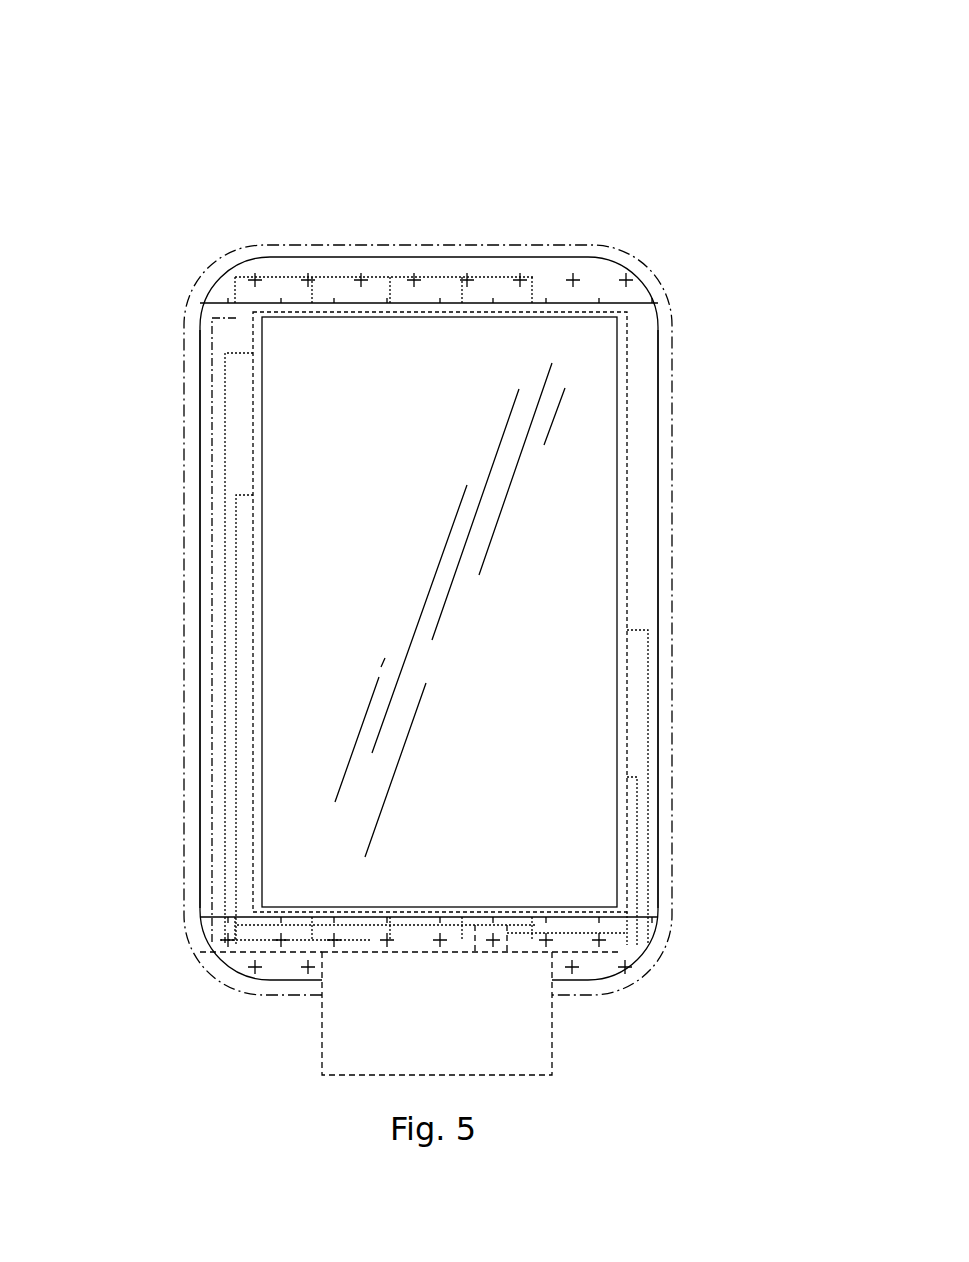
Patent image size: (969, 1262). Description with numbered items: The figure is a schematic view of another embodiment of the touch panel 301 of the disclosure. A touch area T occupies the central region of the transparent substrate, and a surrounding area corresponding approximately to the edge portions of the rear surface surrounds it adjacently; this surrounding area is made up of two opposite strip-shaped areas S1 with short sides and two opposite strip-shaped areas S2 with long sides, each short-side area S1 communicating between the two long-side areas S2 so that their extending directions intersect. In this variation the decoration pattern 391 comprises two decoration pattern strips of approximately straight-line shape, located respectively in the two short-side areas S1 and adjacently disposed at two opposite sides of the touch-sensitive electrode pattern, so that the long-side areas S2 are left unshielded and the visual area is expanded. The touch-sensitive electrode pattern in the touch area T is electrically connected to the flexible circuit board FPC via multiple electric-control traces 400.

The touch panel 301 is at (92, 113).
The decoration pattern 391 is at (545, 238).
The electric-control traces 400 is at (236, 617).
The strip-shaped areas with short sides S1 is at (222, 277).
The strip-shaped areas with long sides S2 is at (658, 531).
The touch area T is at (460, 296).
The flexible circuit board FPC is at (367, 1055).